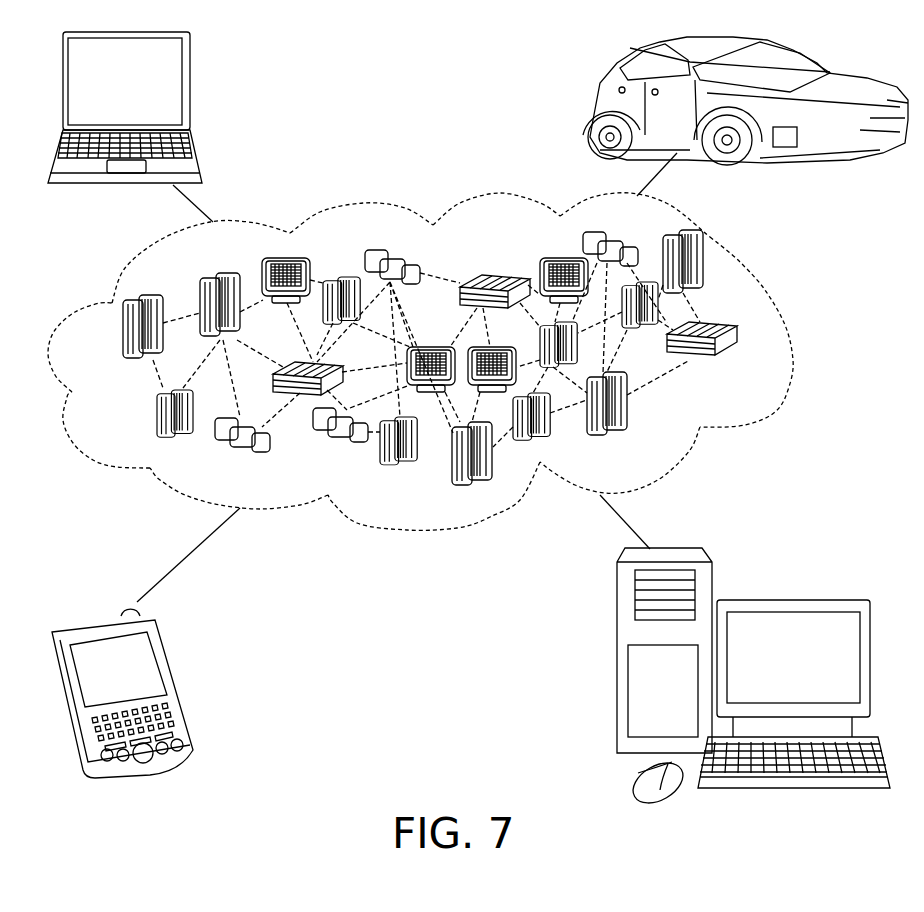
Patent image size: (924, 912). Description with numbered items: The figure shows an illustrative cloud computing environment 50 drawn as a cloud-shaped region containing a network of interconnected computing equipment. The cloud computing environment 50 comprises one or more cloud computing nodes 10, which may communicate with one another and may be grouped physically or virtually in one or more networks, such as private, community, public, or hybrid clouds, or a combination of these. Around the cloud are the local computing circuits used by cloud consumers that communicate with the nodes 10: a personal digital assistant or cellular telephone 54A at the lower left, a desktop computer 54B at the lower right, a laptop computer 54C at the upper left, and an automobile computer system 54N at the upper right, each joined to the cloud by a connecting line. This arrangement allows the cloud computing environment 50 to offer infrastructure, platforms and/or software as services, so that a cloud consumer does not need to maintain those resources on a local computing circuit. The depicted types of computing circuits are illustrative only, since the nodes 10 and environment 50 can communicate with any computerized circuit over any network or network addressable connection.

The laptop computer 54C is at (192, 90).
The automobile computer system 54N is at (590, 105).
The personal digital assistant (PDA) or cellular telephone 54A is at (177, 687).
The desktop computer 54B is at (790, 600).
The cloud computing environment 50 is at (448, 362).
The cloud computing node 10 is at (743, 367).